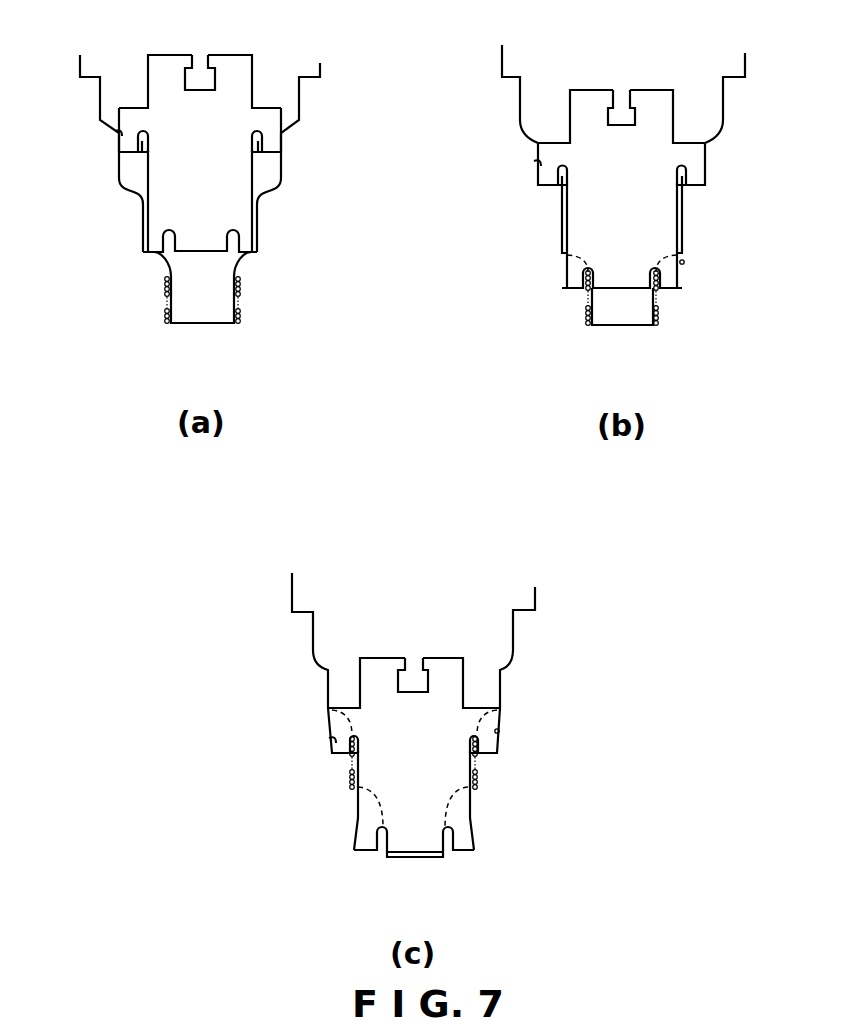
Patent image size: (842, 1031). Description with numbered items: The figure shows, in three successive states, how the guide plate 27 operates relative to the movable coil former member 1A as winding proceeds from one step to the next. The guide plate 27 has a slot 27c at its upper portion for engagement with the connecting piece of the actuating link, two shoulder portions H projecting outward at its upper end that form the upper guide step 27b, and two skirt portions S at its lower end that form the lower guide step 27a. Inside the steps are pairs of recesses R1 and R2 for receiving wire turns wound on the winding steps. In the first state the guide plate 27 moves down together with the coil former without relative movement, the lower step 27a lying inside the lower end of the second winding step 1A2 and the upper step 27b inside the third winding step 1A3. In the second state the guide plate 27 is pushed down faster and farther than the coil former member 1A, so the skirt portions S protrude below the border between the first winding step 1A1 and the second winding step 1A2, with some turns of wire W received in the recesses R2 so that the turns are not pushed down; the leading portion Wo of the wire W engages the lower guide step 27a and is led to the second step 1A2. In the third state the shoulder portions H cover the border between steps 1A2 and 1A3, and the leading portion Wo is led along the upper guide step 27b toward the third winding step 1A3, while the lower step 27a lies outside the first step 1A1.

The guide plate 27 is at (245, 50).
The lower guide step 27a is at (140, 193).
The upper guide step 27b is at (117, 133).
The slot 27c is at (205, 82).
The movable coil former member 1A is at (202, 334).
The first winding step 1A1 is at (238, 297).
The second winding step 1A2 is at (262, 220).
The third winding step 1A3 is at (289, 172).
The recess R1 is at (143, 153).
The recess R2 is at (228, 233).
The skirt portion S is at (152, 254).
The shoulder portion H is at (132, 117).
The wire W is at (165, 312).
The leading portion of the wire Wo is at (684, 263).